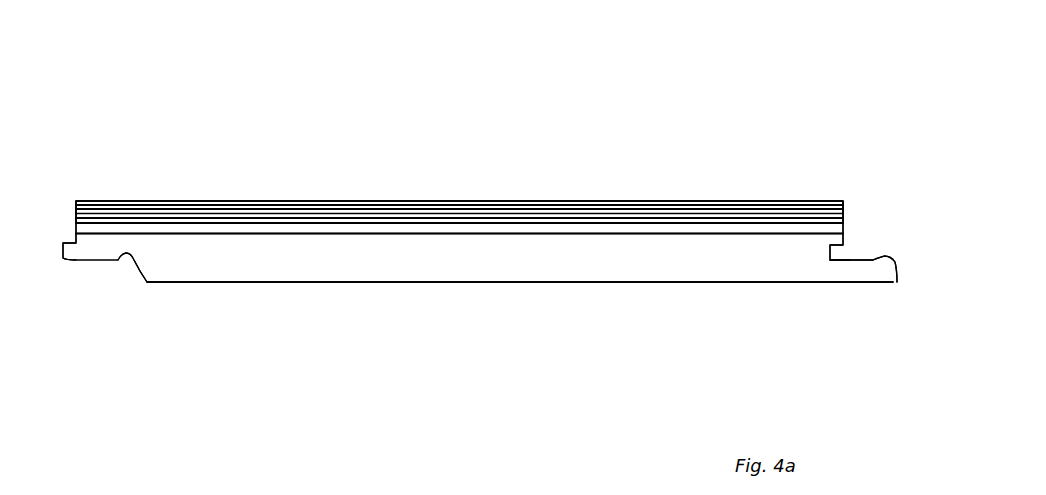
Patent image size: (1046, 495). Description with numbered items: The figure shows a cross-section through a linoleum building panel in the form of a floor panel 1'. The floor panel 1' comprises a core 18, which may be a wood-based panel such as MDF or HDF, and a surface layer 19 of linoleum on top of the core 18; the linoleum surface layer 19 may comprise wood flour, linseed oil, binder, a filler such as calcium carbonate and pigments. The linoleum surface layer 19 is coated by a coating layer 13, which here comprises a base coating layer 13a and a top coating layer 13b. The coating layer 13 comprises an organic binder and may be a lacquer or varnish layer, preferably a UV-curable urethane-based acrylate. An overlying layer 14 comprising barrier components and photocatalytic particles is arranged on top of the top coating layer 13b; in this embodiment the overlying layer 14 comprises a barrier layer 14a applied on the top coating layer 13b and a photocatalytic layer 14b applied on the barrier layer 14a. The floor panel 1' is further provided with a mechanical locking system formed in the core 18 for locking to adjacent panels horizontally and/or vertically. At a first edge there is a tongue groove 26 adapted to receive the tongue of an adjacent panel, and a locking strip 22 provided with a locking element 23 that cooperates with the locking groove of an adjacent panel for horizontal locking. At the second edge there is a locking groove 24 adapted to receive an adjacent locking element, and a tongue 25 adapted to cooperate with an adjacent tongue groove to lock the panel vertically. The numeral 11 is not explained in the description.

The floor panel 1' is at (480, 156).
The overlying layer 14 is at (252, 201).
The coating layer 13 is at (317, 216).
The photocatalytic layer 14b is at (355, 201).
The barrier layer 14a is at (432, 205).
The top coating layer 13b is at (518, 213).
The base coating layer 13a is at (607, 220).
The surface layer 19 is at (713, 230).
The tongue groove 26 is at (842, 250).
The tongue 25 is at (73, 260).
The locking groove 24 is at (125, 258).
The core 18 is at (342, 267).
The core 11 is at (562, 235).
The locking strip 22 is at (853, 272).
The locking element 23 is at (892, 273).